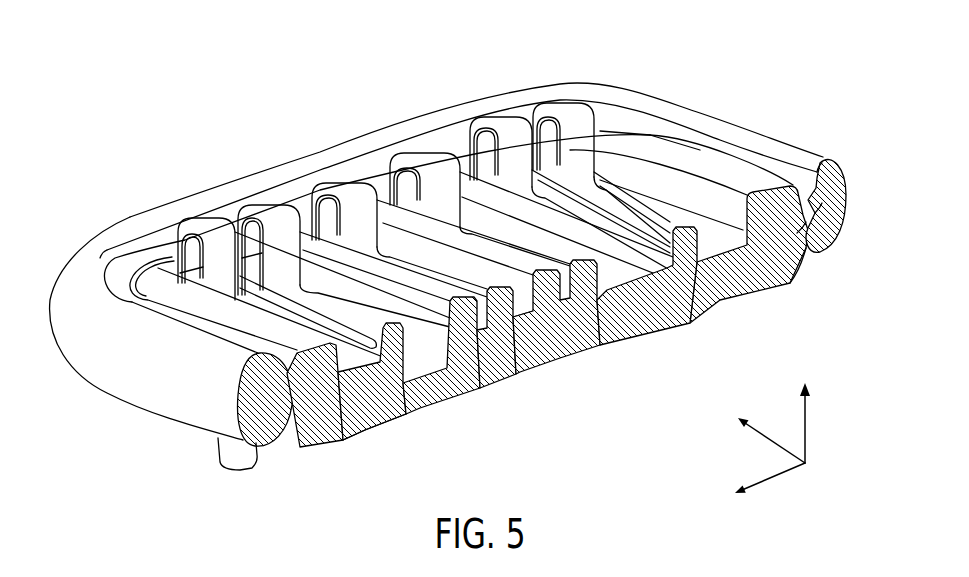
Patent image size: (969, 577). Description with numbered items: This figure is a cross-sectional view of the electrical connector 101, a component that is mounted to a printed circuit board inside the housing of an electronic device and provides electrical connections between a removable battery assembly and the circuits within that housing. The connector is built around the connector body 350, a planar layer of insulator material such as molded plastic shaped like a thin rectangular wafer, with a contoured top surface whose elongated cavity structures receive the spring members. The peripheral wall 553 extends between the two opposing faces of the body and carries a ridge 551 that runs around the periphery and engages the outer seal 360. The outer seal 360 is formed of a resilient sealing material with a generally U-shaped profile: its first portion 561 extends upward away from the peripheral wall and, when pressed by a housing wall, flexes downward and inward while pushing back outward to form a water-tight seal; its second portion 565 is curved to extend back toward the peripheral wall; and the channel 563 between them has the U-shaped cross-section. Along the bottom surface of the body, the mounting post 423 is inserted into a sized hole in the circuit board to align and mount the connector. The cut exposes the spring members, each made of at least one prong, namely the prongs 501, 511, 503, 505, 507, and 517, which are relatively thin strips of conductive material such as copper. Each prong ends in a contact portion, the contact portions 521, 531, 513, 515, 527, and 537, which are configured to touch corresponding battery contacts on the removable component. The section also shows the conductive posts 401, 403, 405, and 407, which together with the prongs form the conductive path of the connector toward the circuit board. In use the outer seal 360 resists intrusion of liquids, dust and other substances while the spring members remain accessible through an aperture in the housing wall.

The electrical connector 101 is at (208, 57).
The connector body 350 is at (740, 160).
The outer seal 360 is at (838, 144).
The first portion 561 is at (823, 160).
The channel 563 is at (823, 207).
The second portion 565 is at (793, 257).
The ridge 551 is at (797, 233).
The peripheral wall 553 is at (313, 427).
The mounting post 423 is at (238, 453).
The prong 501 is at (725, 175).
The prong 503 is at (555, 266).
The prong 511 is at (657, 217).
The contact portion 537 is at (210, 232).
The contact portion 527 is at (268, 220).
The contact portion 515 is at (345, 190).
The contact portion 513 is at (427, 163).
The contact portion 531 is at (503, 130).
The contact portion 521 is at (568, 117).
The prong 517 is at (383, 417).
The conductive post 407 is at (383, 410).
The prong 507 is at (443, 383).
The prong 505 is at (507, 363).
The conductive post 405 is at (515, 380).
The conductive post 403 is at (580, 340).
The conductive post 401 is at (687, 303).